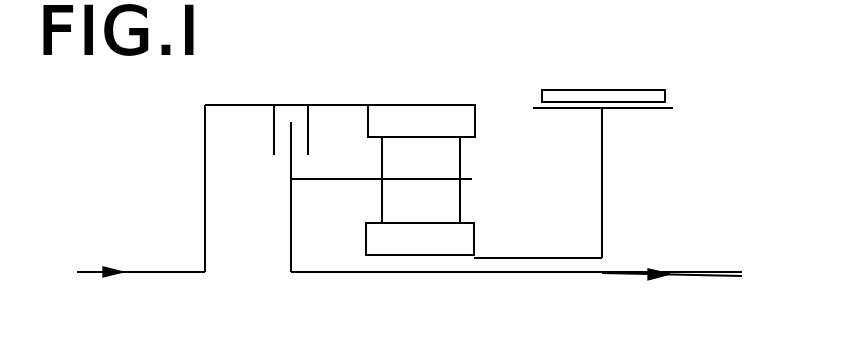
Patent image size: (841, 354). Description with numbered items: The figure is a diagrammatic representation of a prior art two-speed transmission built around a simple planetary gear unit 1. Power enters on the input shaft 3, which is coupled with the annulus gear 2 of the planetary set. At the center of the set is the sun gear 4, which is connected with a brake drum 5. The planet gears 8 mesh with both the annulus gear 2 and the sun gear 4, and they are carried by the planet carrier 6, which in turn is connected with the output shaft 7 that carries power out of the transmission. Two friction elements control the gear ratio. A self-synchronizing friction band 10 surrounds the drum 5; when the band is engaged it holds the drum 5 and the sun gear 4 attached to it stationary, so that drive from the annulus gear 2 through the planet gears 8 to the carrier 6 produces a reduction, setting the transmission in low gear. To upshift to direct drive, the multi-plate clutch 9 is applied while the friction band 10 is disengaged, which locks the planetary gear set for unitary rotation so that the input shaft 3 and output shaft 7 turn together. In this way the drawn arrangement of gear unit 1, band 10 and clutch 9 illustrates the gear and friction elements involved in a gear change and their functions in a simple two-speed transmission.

The planetary gear unit 1 is at (498, 225).
The annulus gear 2 is at (422, 125).
The input shaft 3 is at (145, 270).
The sun gear 4 is at (422, 242).
The brake drum 5 is at (673, 108).
The planet carrier 6 is at (340, 179).
The output shaft 7 is at (702, 276).
The planet gears 8 is at (442, 168).
The multi-plate clutch 9 is at (282, 133).
The self-synchronizing friction band 10 is at (625, 92).